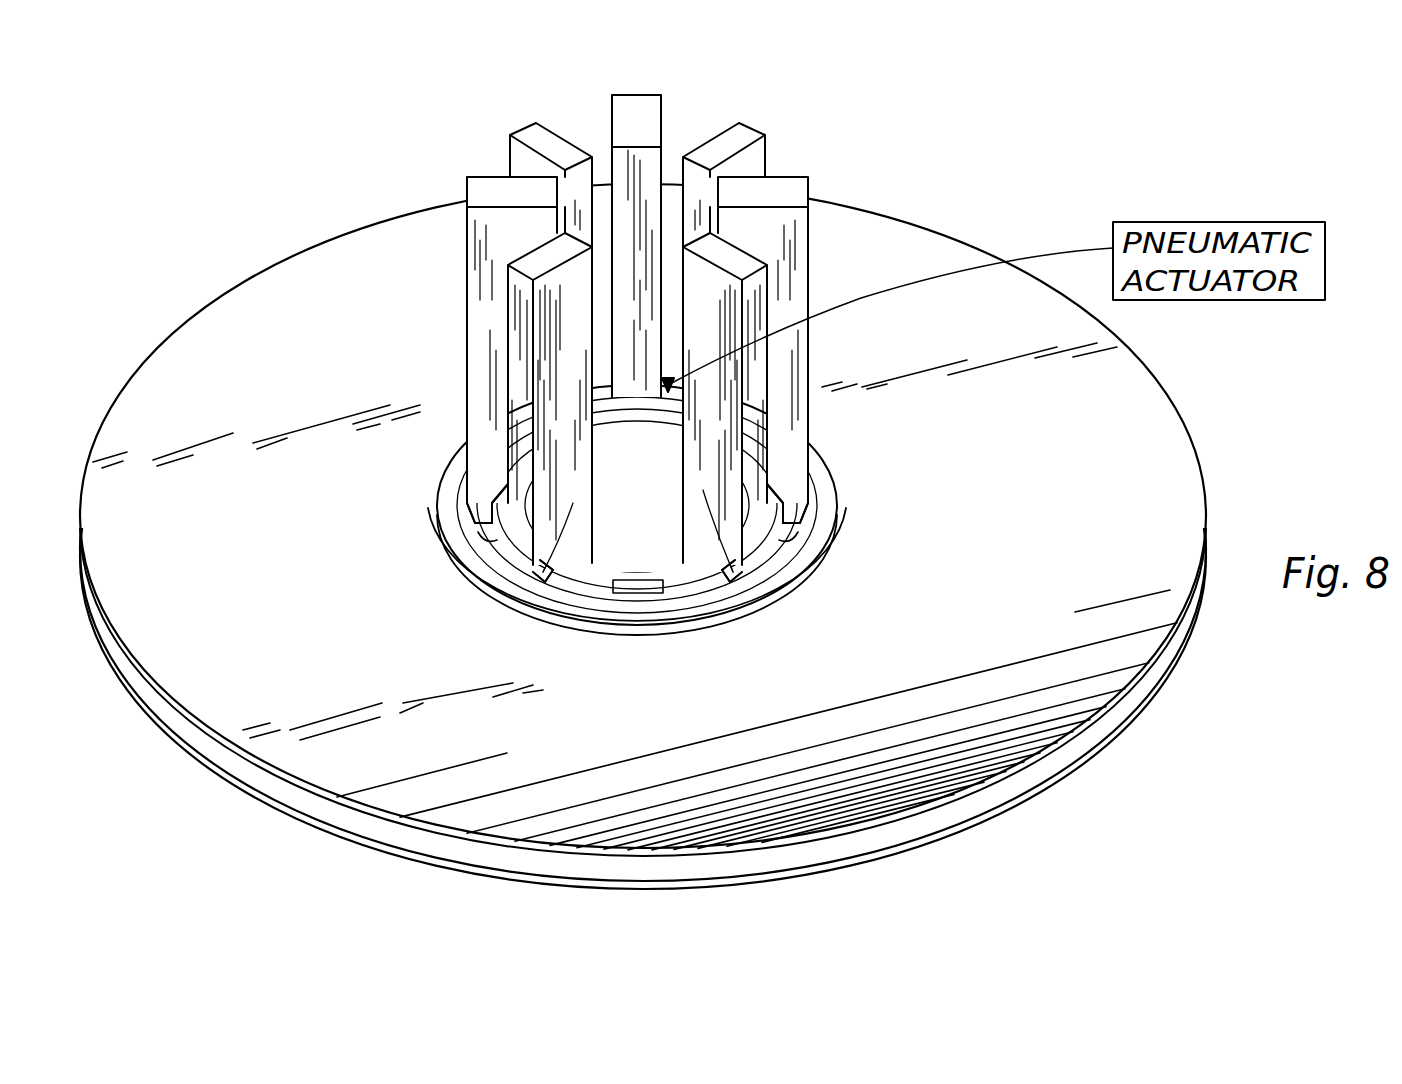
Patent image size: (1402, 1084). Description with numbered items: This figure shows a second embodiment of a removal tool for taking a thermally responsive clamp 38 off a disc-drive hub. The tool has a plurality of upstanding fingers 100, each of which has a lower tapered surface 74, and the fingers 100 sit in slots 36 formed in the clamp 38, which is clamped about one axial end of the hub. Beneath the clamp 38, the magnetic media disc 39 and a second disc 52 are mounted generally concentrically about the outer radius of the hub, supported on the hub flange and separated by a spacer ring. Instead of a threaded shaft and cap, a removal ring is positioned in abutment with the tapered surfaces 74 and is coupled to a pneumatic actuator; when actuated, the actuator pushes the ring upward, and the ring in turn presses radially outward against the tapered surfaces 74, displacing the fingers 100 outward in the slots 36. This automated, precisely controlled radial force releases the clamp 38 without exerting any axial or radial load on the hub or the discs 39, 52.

The fingers 100 is at (611, 96).
The lower tapered surface 74 is at (503, 488).
The slots 36 is at (482, 535).
The thermally responsive clamp 38 is at (812, 573).
The magnetic media disc 39 is at (1105, 492).
The disc 52 is at (1137, 712).